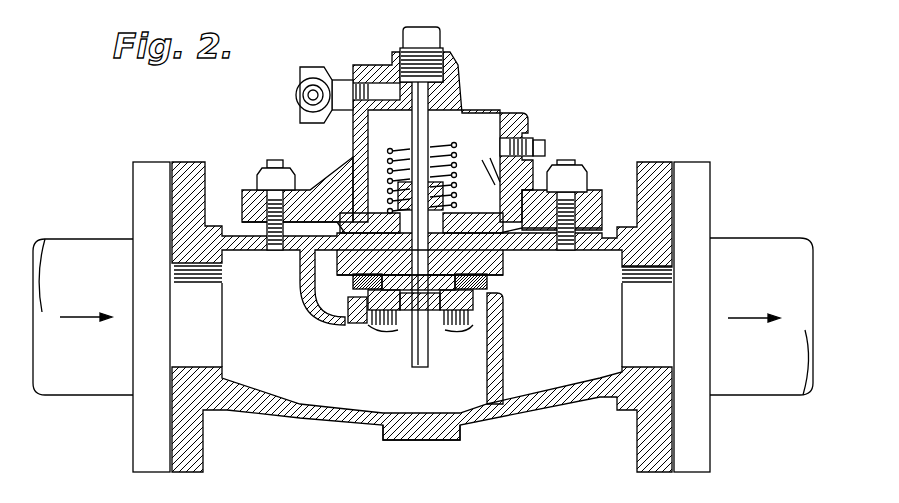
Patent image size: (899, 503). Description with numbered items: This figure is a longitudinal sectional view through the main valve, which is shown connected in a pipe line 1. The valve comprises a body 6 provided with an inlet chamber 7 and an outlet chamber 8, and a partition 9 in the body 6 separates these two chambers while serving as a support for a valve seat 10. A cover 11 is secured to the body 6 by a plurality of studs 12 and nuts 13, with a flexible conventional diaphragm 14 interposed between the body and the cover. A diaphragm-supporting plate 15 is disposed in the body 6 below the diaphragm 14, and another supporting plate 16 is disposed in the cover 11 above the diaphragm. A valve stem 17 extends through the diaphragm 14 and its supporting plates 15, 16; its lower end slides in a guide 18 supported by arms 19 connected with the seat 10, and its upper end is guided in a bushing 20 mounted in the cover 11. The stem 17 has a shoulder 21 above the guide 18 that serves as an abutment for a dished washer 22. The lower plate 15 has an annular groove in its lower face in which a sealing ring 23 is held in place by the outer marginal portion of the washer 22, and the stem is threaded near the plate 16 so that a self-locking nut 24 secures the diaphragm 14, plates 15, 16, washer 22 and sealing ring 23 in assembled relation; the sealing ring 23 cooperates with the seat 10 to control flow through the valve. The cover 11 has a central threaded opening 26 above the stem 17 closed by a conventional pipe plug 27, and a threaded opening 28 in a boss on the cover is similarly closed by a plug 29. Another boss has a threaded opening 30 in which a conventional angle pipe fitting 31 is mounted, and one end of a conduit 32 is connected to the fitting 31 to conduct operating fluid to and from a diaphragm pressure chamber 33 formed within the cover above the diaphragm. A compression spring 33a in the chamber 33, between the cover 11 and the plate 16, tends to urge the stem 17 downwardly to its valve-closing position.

The pipe line 1 is at (99, 403).
The body 6 is at (318, 418).
The inlet chamber 7 is at (268, 328).
The outlet chamber 8 is at (581, 328).
The partition 9 is at (497, 352).
The valve seat 10 is at (495, 298).
The cover 11 is at (598, 192).
The studs 12 is at (270, 162).
The nuts 13 is at (258, 180).
The diaphragm 14 is at (248, 218).
The diaphragm-supporting plate 15 is at (505, 264).
The supporting plate 16 is at (494, 216).
The valve stem 17 is at (410, 352).
The guide 18 is at (438, 325).
The arms 19 is at (392, 333).
The bushing 20 is at (458, 105).
The shoulder 21 is at (414, 440).
The dished washer 22 is at (386, 312).
The sealing ring 23 is at (503, 281).
The self-locking nut 24 is at (396, 200).
The central threaded opening 26 is at (447, 70).
The pipe plug 27 is at (440, 42).
The threaded opening 28 is at (520, 112).
The plug 29 is at (536, 142).
The threaded opening 30 is at (362, 66).
The angle pipe fitting 31 is at (300, 82).
The conduit 32 is at (298, 102).
The diaphragm pressure chamber 33 is at (545, 150).
The compression spring 33a is at (486, 165).